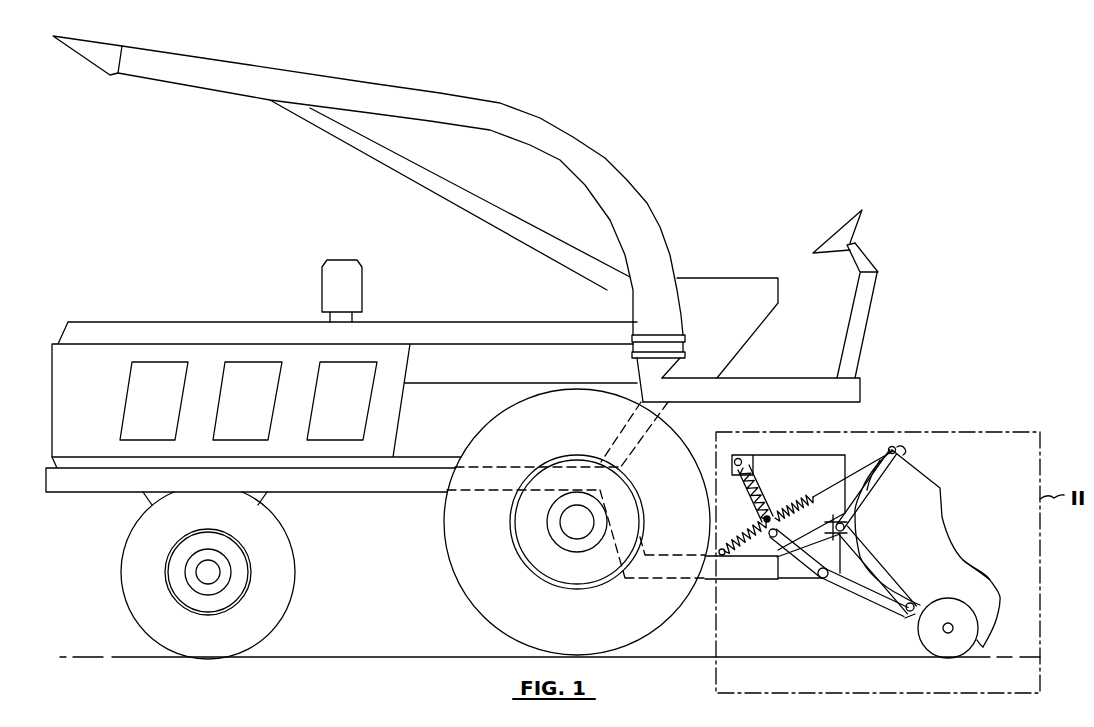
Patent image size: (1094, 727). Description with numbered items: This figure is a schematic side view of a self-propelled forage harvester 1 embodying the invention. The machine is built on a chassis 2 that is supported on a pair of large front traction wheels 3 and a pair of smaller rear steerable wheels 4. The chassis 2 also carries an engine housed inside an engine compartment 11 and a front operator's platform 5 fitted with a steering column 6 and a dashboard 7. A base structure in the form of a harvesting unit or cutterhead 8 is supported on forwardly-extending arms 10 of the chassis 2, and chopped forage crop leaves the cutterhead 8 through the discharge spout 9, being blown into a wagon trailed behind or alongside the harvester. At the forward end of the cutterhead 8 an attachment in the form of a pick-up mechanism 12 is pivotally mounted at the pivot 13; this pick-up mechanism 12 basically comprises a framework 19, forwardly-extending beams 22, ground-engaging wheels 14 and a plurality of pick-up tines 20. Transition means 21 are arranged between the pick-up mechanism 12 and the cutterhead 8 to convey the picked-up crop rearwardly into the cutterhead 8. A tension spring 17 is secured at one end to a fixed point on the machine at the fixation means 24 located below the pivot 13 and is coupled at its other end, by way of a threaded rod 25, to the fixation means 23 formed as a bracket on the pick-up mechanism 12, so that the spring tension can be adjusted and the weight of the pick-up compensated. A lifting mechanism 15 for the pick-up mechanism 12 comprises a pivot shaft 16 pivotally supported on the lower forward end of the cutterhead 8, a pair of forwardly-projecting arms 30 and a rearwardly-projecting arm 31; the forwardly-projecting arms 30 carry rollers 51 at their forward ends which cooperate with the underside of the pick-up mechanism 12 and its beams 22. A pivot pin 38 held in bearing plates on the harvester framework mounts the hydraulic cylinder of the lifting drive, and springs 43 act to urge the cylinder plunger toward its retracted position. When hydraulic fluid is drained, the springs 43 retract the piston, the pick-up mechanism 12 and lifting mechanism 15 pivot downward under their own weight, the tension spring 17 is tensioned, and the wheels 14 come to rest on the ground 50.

The forage harvester 1 is at (414, 315).
The chassis 2 is at (373, 493).
The front traction wheels 3 is at (448, 566).
The rear steerable wheels 4 is at (297, 582).
The operator's platform 5 is at (800, 400).
The steering column 6 is at (863, 338).
The dashboard 7 is at (748, 278).
The cutterhead 8 is at (843, 445).
The discharge spout 9 is at (670, 257).
The forwardly-extending arms 10 is at (710, 585).
The engine compartment 11 is at (183, 310).
The pick-up mechanism 12 is at (965, 527).
The pivot 13 is at (847, 527).
The ground-engaging wheels 14 is at (920, 628).
The lifting mechanism 15 is at (865, 612).
The pivot shaft 16 is at (823, 580).
The tension spring 17 is at (797, 500).
The framework 19 is at (962, 553).
The pick-up tines 20 is at (1013, 608).
The transition means 21 is at (873, 480).
The forwardly-extending beams 22 is at (823, 548).
The fixation means 23 is at (902, 455).
The fixation means 24 is at (733, 573).
The threaded rod 25 is at (867, 460).
The forwardly-projecting arms 30 is at (878, 608).
The rearwardly-projecting arm 31 is at (800, 573).
The pivot pin 38 is at (739, 459).
The springs 43 is at (762, 492).
The ground 50 is at (682, 657).
The rollers 51 is at (913, 598).